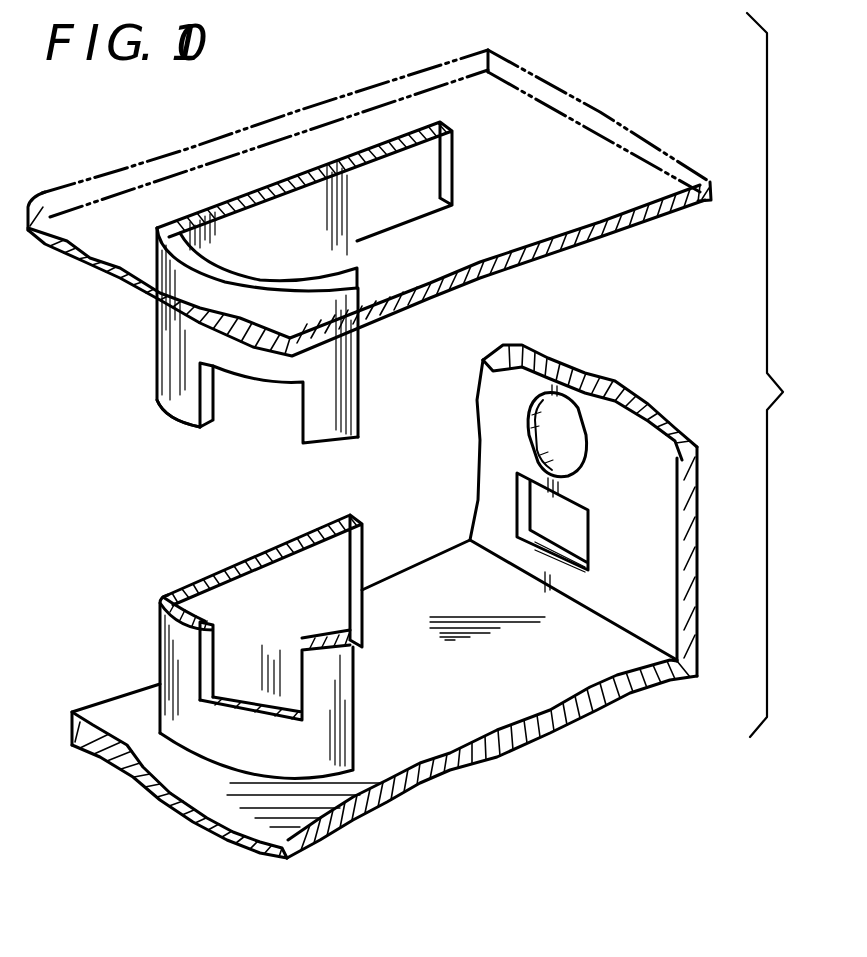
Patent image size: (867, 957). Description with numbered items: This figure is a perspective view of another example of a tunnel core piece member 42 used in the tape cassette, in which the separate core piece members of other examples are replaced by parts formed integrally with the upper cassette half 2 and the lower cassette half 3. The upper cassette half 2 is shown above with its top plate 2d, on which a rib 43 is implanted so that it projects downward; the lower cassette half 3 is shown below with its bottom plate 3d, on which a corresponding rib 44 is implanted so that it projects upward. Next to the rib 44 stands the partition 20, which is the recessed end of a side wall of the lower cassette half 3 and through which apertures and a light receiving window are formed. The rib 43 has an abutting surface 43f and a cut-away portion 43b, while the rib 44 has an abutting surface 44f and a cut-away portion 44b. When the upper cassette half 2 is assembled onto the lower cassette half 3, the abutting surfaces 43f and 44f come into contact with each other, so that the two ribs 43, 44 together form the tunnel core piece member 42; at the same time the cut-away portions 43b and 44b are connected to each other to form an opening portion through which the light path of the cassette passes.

The upper cassette half 2 is at (380, 194).
The top plate 2d is at (647, 182).
The lower cassette half 3 is at (398, 699).
The bottom plate 3d is at (524, 699).
The partition 20 is at (654, 504).
The tunnel core piece member 42 is at (156, 461).
The rib 43 is at (302, 307).
The cut-away portion 43b is at (266, 383).
The abutting surface 43f is at (193, 424).
The rib 44 is at (253, 642).
The abutting surface 44f is at (182, 590).
The cut-away portion 44b is at (216, 658).